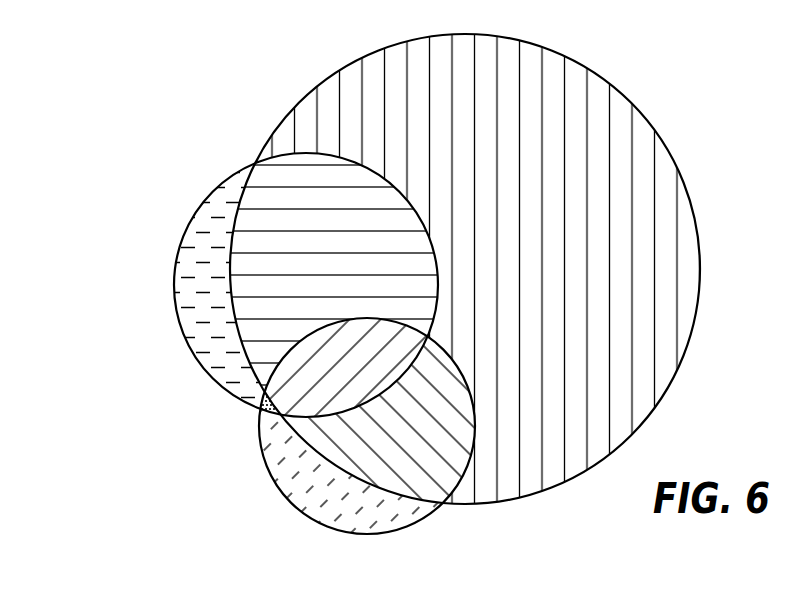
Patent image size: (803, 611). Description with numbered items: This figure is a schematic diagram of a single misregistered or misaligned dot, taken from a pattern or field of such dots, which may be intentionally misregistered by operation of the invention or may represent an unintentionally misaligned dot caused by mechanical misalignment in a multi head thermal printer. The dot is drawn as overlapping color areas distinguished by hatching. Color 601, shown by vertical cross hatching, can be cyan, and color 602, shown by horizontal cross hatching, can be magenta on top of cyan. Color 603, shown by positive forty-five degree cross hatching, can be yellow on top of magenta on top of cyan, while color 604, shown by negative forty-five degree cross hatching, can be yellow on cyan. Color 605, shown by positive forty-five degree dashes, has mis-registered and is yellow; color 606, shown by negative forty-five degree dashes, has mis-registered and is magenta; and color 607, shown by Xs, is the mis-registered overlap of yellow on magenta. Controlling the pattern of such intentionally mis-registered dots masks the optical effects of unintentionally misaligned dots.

The cyan color region 601 is at (578, 98).
The magenta on cyan color region 602 is at (298, 180).
The yellow on magenta on cyan color region 603 is at (307, 360).
The yellow on cyan color region 604 is at (418, 475).
The mis-registered yellow color region 605 is at (311, 497).
The mis-registered magenta color region 606 is at (203, 233).
The mis-registered yellow on magenta overlap region 607 is at (265, 415).